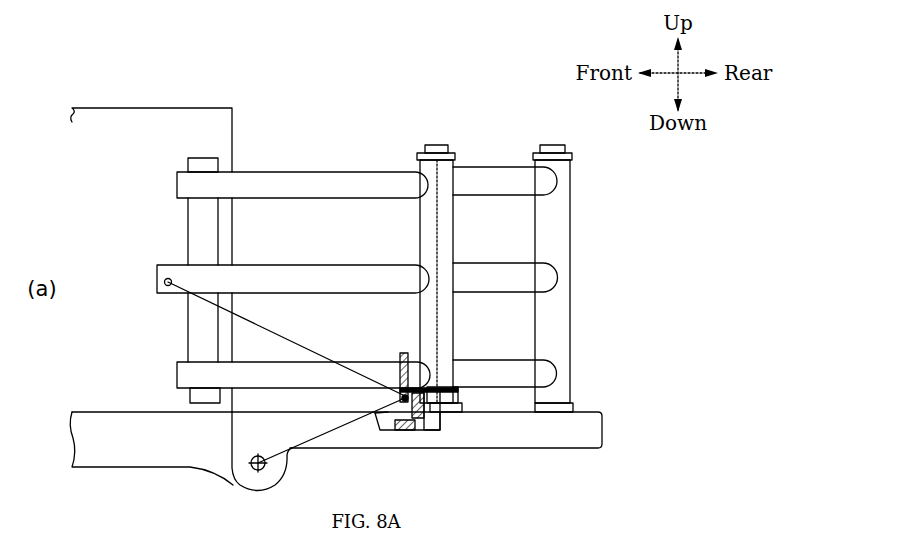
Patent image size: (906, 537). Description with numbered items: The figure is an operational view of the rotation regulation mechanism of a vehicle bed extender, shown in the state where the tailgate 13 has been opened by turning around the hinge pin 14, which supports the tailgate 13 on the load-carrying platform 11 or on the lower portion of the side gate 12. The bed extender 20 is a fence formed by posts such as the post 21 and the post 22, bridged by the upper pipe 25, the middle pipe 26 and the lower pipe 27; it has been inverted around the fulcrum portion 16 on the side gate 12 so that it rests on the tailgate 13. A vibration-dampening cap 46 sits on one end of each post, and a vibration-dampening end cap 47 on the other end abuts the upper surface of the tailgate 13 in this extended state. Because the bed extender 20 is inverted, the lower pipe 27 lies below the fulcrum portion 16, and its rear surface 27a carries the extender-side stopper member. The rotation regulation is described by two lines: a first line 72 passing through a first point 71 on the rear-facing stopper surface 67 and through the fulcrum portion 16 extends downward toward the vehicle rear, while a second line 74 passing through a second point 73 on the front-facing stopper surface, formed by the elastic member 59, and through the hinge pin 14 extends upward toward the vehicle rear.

The load-carrying platform 11 is at (112, 430).
The side gate 12 is at (178, 122).
The tailgate 13 is at (595, 428).
The hinge pin 14 is at (252, 470).
The fulcrum portion 16 is at (165, 279).
The bed extender 20 is at (488, 85).
The post 21 is at (418, 160).
The post 22 is at (572, 175).
The upper pipe 25 is at (490, 180).
The middle pipe 26 is at (505, 264).
The lower pipe 27 is at (507, 361).
The rear surface 27a is at (373, 373).
The vibration-dampening cap 46 is at (437, 145).
The vibration-dampening end cap 47 is at (577, 406).
The elastic member 59 is at (430, 420).
The rear-facing stopper surface 67 is at (415, 357).
The first point 71 is at (412, 414).
The first line 72 is at (298, 341).
The second point 73 is at (398, 431).
The second line 74 is at (333, 438).